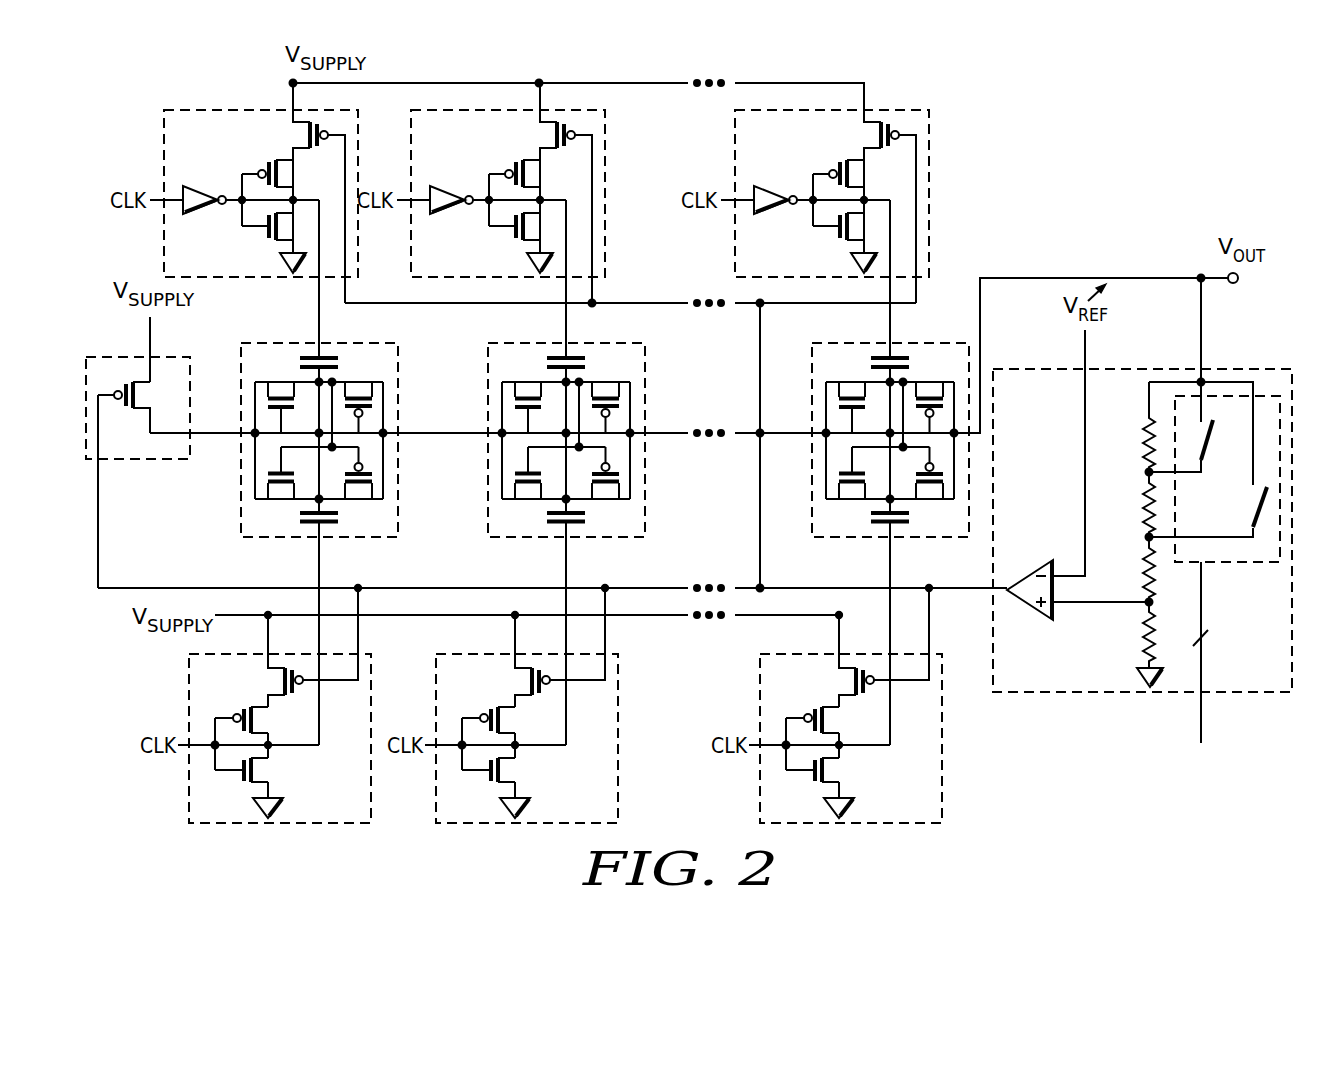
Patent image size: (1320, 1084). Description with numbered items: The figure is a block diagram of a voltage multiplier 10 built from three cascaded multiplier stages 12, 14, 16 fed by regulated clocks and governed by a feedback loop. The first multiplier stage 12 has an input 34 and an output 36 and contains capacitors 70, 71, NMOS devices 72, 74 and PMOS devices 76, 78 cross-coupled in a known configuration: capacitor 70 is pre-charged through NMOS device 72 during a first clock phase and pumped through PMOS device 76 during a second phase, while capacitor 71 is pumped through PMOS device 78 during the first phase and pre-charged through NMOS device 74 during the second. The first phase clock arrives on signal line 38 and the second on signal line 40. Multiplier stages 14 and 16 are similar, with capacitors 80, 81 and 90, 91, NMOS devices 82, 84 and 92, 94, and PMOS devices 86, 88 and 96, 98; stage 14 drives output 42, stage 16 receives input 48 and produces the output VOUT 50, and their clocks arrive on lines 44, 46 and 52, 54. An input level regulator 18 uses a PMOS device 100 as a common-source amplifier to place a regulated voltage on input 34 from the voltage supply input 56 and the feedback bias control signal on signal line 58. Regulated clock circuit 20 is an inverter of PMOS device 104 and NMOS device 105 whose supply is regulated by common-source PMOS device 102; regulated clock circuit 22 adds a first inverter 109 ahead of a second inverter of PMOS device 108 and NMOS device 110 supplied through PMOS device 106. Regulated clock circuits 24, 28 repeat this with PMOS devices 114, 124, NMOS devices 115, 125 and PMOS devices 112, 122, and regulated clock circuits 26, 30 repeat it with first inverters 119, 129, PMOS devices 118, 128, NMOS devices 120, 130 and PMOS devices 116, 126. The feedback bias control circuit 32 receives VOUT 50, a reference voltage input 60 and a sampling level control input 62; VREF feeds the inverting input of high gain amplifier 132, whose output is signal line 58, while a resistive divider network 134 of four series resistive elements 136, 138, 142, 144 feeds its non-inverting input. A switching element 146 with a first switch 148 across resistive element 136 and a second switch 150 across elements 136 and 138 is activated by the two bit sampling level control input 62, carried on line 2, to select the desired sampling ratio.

The sampling level control line 2 is at (1206, 652).
The voltage multiplier 10 is at (1151, 116).
The first multiplier stage 12 is at (296, 440).
The multiplier stage 14 is at (543, 440).
The multiplier stage 16 is at (867, 440).
The input level regulator 18 is at (170, 459).
The regulated clock circuit 20 is at (257, 738).
The regulated clock circuit 22 is at (236, 193).
The regulated clock circuit 24 is at (504, 738).
The regulated clock circuit 26 is at (483, 193).
The regulated clock circuit 28 is at (828, 738).
The regulated clock circuit 30 is at (807, 193).
The feedback bias control circuit 32 is at (1036, 692).
The input 34 is at (215, 412).
The output 36 is at (458, 412).
The signal line 38 is at (293, 634).
The signal line 40 is at (293, 278).
The output 42 is at (666, 412).
The second lower clock line 44 is at (540, 634).
The second upper clock line 46 is at (540, 278).
The multiplier input 48 is at (786, 412).
The output VOUT 50 is at (1018, 276).
The last lower clock line 52 is at (864, 634).
The last upper clock line 54 is at (864, 278).
The voltage supply input 56 is at (144, 330).
The feedback bias control signal line 58 is at (103, 547).
The reference voltage input 60 is at (1082, 350).
The sampling level control input 62 is at (1195, 720).
The capacitor 70 is at (333, 537).
The capacitor 71 is at (333, 344).
The NMOS device 72 is at (276, 489).
The NMOS device 74 is at (276, 392).
The PMOS device 76 is at (358, 489).
The PMOS device 78 is at (358, 392).
The capacitor 80 is at (580, 537).
The capacitor 81 is at (580, 344).
The NMOS device 82 is at (523, 489).
The NMOS device 84 is at (523, 392).
The PMOS device 86 is at (605, 489).
The PMOS device 88 is at (605, 392).
The capacitor 90 is at (904, 537).
The capacitor 91 is at (904, 344).
The NMOS device 92 is at (847, 489).
The NMOS device 94 is at (847, 392).
The PMOS device 96 is at (929, 489).
The PMOS device 98 is at (929, 392).
The PMOS device 100 is at (138, 394).
The PMOS device 102 is at (295, 646).
The PMOS device 104 is at (270, 730).
The NMOS device 105 is at (245, 788).
The PMOS device 106 is at (298, 193).
The PMOS device 108 is at (295, 186).
The first inverter 109 is at (221, 185).
The NMOS device 110 is at (270, 243).
The PMOS device 112 is at (542, 646).
The PMOS device 114 is at (517, 730).
The NMOS device 115 is at (492, 788).
The PMOS device 116 is at (545, 193).
The PMOS device 118 is at (542, 186).
The first inverter 119 is at (468, 185).
The NMOS device 120 is at (517, 243).
The PMOS device 122 is at (866, 646).
The PMOS device 124 is at (841, 730).
The NMOS device 125 is at (816, 788).
The PMOS device 126 is at (869, 193).
The PMOS device 128 is at (866, 186).
The first inverter 129 is at (792, 185).
The NMOS device 130 is at (841, 243).
The high gain amplifier 132 is at (1016, 578).
The resistive divider network 134 is at (1098, 650).
The resistive element 136 is at (1141, 428).
The resistive element 138 is at (1141, 493).
The resistive element 142 is at (1141, 558).
The resistive element 144 is at (1139, 625).
The switching element 146 is at (1253, 562).
The first switch 148 is at (1226, 445).
The second switch 150 is at (1252, 510).